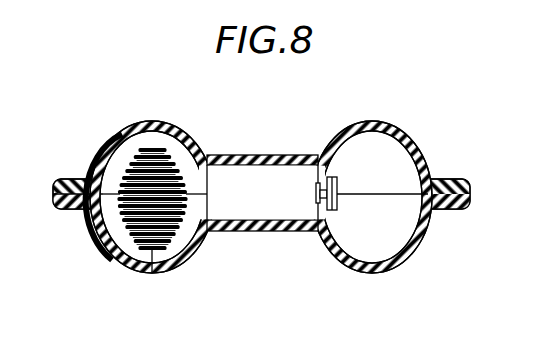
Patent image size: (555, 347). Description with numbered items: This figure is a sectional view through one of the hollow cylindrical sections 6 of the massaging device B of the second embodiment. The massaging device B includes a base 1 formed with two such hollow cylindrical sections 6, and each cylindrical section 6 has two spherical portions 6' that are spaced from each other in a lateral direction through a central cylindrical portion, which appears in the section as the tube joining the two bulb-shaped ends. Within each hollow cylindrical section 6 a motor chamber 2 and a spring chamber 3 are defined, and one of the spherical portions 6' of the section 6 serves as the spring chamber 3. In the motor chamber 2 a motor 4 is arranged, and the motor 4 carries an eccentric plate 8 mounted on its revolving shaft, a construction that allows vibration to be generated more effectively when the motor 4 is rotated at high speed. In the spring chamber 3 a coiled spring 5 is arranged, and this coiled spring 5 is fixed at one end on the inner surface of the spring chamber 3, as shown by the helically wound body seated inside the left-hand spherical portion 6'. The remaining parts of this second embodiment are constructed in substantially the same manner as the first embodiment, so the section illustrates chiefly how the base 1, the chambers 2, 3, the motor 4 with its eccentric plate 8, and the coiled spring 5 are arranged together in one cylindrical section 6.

The base 1 is at (447, 180).
The motor chamber 2 is at (287, 212).
The spring chamber 3 is at (142, 140).
The motor 4 is at (278, 175).
The coiled spring 5 is at (116, 170).
The hollow cylindrical section 6 is at (262, 136).
The spherical portion 6' is at (263, 209).
The eccentric plate 8 is at (333, 177).
The massaging device B is at (155, 274).